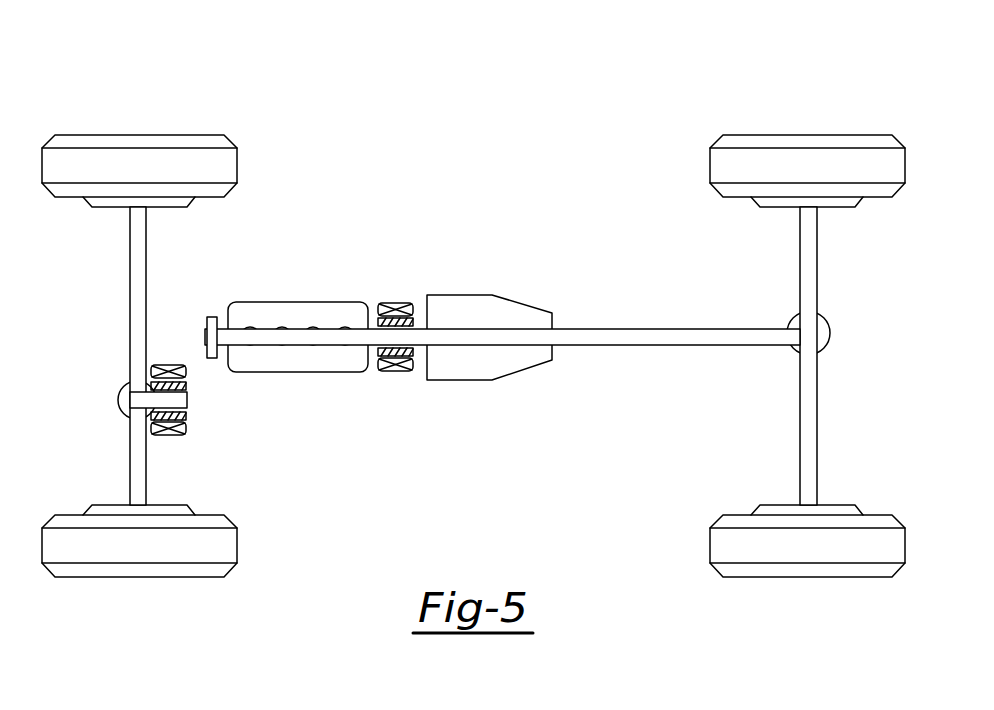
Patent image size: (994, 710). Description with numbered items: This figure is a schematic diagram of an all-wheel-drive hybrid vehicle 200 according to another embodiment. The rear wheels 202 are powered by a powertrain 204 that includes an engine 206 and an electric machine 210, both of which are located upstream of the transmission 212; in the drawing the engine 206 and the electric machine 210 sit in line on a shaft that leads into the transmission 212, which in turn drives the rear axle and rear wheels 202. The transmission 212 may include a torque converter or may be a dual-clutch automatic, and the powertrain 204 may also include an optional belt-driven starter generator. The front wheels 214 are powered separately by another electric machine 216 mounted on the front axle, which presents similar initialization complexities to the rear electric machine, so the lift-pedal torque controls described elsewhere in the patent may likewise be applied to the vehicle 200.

The all-wheel-drive hybrid vehicle 200 is at (259, 79).
The rear wheels 202 is at (807, 137).
The powertrain 204 is at (528, 238).
The engine 206 is at (303, 312).
The electric machine 210 is at (395, 300).
The transmission 212 is at (470, 367).
The front wheels 214 is at (138, 137).
The electric machine 216 is at (187, 412).